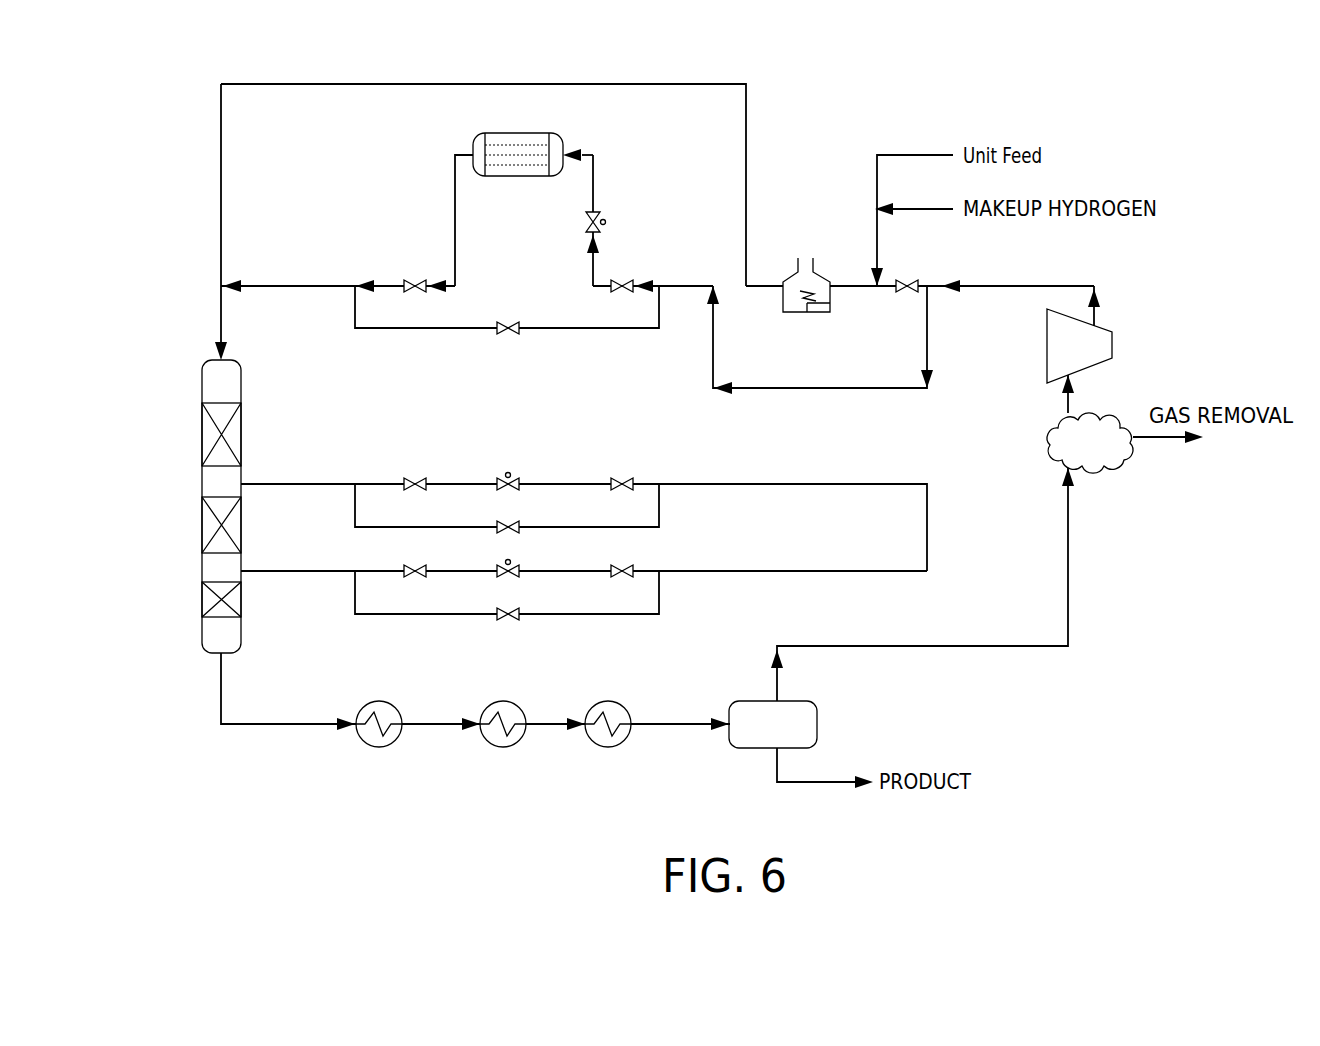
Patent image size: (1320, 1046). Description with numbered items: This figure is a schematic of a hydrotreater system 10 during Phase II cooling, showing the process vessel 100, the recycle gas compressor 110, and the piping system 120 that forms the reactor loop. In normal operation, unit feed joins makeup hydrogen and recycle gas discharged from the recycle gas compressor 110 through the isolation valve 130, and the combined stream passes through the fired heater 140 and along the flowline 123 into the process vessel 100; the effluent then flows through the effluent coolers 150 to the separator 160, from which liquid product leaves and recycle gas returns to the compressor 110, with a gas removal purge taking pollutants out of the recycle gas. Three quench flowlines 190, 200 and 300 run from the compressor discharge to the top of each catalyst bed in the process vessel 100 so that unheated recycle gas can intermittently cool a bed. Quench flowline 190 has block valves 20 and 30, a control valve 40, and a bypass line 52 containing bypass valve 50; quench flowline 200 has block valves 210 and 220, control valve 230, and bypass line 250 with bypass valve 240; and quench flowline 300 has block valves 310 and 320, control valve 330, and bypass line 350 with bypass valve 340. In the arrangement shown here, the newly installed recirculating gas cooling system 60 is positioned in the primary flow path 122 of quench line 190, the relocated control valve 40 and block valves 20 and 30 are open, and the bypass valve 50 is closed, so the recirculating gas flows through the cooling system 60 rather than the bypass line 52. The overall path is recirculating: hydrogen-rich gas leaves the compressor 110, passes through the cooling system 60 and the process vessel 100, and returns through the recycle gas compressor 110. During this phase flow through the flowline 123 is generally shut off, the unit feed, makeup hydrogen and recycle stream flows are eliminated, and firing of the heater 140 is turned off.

The hydrotreater system 10 is at (893, 82).
The block valve 20 is at (410, 280).
The block valve 30 is at (628, 282).
The control valve 40 is at (600, 212).
The bypass valve 50 is at (505, 335).
The bypass line 52 is at (622, 330).
The recirculating gas cooling system 60 is at (520, 134).
The process vessel 100 is at (200, 388).
The recycle gas compressor 110 is at (1100, 325).
The piping system 120 is at (175, 276).
The primary flow path 122 is at (593, 268).
The flowline 123 is at (466, 84).
The isolation valve 130 is at (910, 282).
The fired heater 140 is at (798, 268).
The effluent cooler 150 is at (380, 700).
The separator 160 is at (818, 720).
The quench flowline 190 is at (790, 388).
The quench flowline 200 is at (713, 484).
The block valve 210 is at (420, 478).
The block valve 220 is at (628, 478).
The control valve 230 is at (515, 478).
The bypass valve 240 is at (515, 522).
The bypass line 250 is at (660, 507).
The quench flowline 300 is at (795, 571).
The block valve 310 is at (420, 565).
The block valve 320 is at (628, 565).
The control valve 330 is at (515, 565).
The bypass valve 340 is at (515, 609).
The bypass line 350 is at (660, 593).